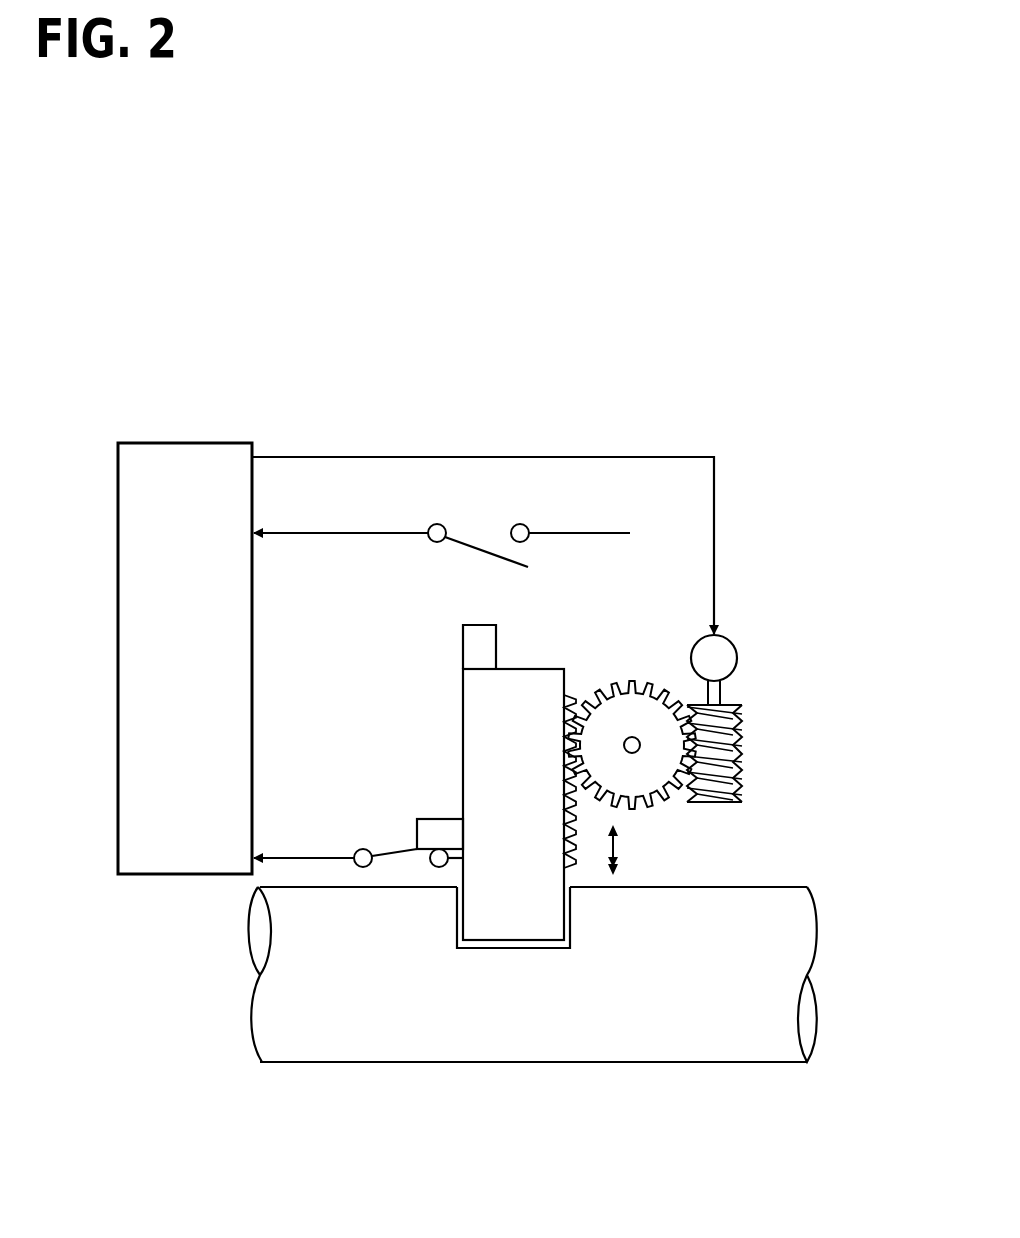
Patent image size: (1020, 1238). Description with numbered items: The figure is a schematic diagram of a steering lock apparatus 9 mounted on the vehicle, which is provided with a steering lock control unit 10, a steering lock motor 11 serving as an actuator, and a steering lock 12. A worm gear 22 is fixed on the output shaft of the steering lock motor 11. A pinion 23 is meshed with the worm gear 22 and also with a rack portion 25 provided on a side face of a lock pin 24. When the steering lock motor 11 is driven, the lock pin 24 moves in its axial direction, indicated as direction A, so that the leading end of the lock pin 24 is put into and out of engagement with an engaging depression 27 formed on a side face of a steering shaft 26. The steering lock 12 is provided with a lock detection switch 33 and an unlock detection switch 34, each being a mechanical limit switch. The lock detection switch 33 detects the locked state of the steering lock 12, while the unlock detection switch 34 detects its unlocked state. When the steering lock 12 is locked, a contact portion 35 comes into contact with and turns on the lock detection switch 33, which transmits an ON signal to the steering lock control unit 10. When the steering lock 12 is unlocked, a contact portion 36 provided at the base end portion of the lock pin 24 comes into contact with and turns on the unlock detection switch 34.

The steering lock apparatus 9 is at (817, 484).
The steering lock control unit 10 is at (177, 875).
The steering lock motor 11 is at (738, 658).
The steering lock 12 is at (630, 590).
The worm gear 22 is at (745, 722).
The pinion 23 is at (660, 802).
The lock pin 24 is at (547, 660).
The rack portion 25 is at (578, 846).
The steering shaft 26 is at (805, 925).
The engaging depression 27 is at (520, 948).
The lock detection switch 33 is at (389, 855).
The unlock detection switch 34 is at (490, 550).
The contact portion 35 is at (417, 821).
The contact portion 36 is at (480, 624).
The direction A is at (617, 856).